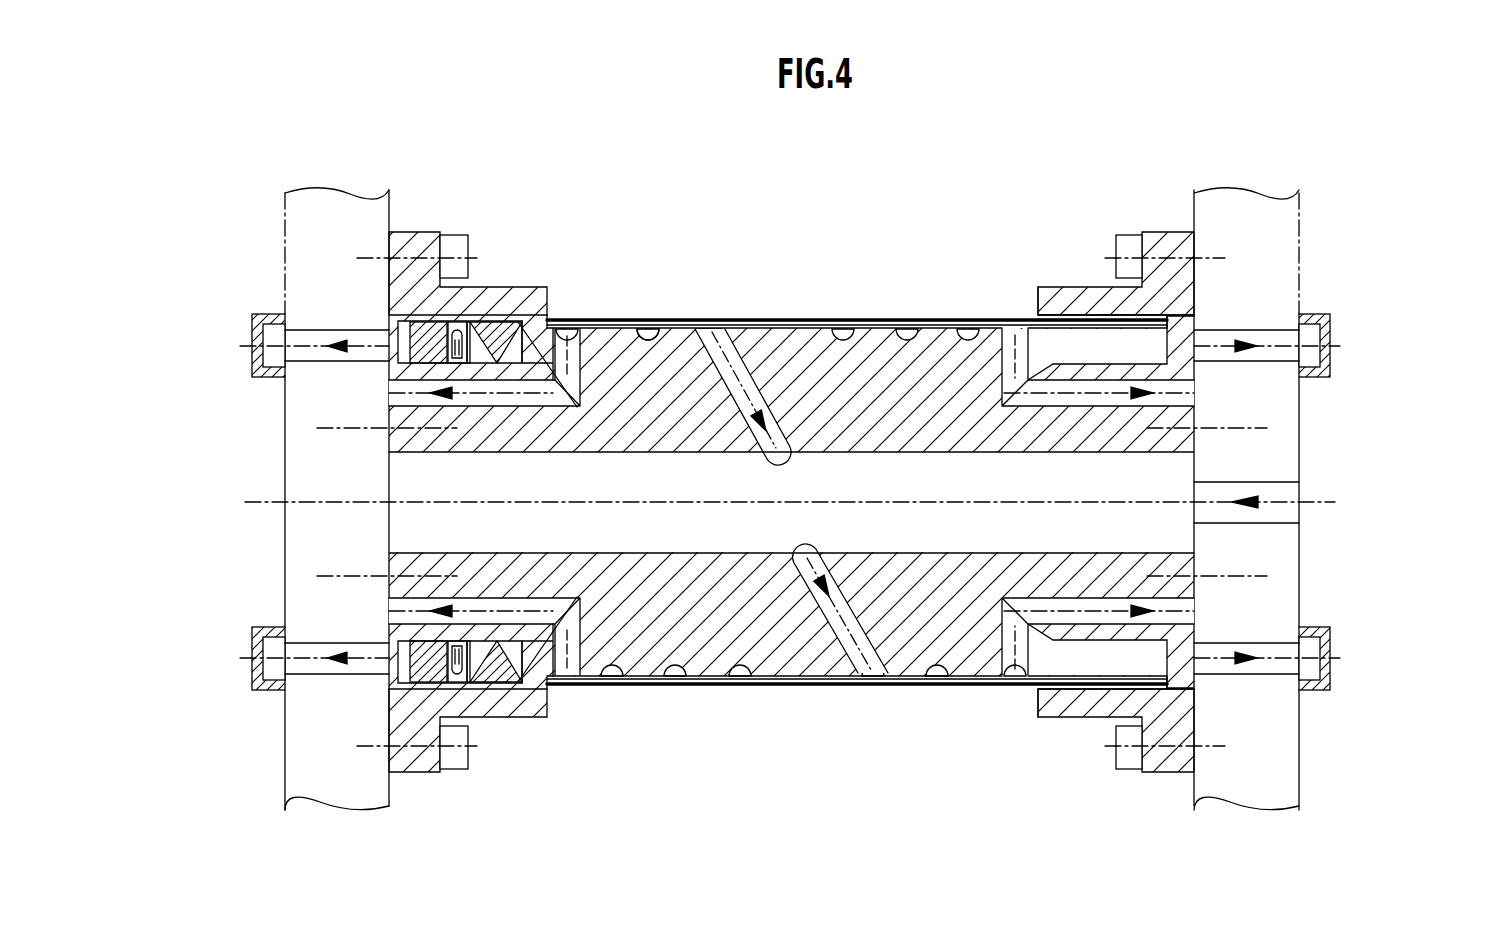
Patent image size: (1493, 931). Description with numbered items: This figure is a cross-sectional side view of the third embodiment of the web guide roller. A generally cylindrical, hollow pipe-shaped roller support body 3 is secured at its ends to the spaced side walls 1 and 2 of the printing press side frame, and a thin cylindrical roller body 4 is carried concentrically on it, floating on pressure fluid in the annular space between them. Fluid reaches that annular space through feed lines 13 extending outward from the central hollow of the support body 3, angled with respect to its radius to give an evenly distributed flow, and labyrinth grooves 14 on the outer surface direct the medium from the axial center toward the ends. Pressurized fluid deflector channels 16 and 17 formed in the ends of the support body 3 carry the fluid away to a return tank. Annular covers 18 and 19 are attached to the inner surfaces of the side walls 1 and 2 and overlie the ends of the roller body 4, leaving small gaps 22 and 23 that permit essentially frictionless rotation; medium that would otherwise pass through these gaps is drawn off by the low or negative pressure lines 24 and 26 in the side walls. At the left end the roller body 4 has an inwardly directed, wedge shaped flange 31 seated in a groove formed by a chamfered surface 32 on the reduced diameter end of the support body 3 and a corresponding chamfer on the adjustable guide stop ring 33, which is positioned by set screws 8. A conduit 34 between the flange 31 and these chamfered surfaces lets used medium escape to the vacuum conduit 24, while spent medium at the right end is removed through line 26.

The side wall 1 is at (358, 228).
The side wall 2 is at (1238, 247).
The roller support body 3 is at (780, 360).
The roller body 4 is at (846, 322).
The set screws 8 is at (426, 337).
The feed lines 13 is at (741, 317).
The labyrinth grooves 14 is at (650, 328).
The pressurized fluid deflector channel 16 is at (403, 396).
The pressurized fluid deflector channel 17 is at (1178, 397).
The annular cover 18 is at (420, 243).
The annular cover 19 is at (1148, 243).
The gap 22 is at (568, 326).
The gap 23 is at (1037, 316).
The low pressure line 24 is at (312, 341).
The low pressure line 26 is at (1282, 353).
The flange 31 is at (498, 669).
The chamfered surface 32 is at (521, 679).
The adjustable guide stop ring 33 is at (456, 323).
The conduit 34 is at (472, 318).